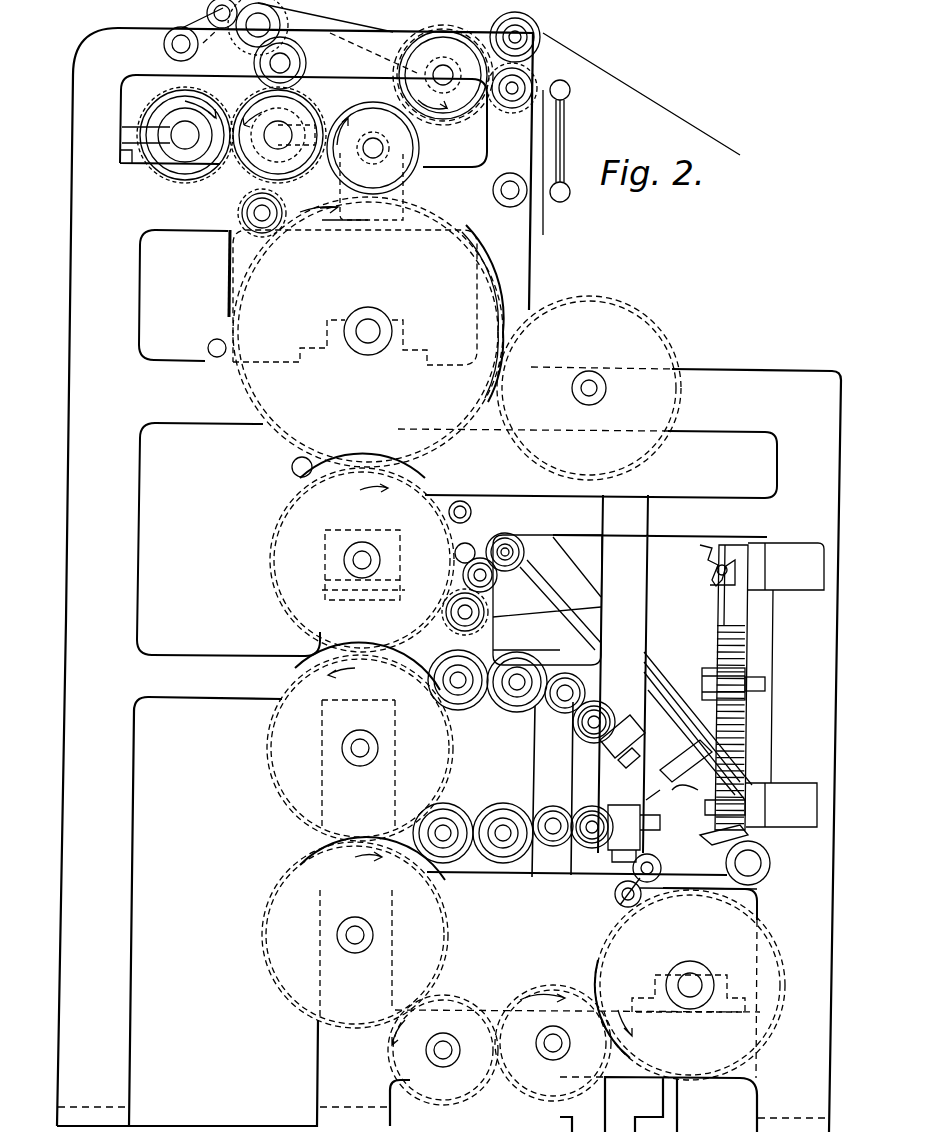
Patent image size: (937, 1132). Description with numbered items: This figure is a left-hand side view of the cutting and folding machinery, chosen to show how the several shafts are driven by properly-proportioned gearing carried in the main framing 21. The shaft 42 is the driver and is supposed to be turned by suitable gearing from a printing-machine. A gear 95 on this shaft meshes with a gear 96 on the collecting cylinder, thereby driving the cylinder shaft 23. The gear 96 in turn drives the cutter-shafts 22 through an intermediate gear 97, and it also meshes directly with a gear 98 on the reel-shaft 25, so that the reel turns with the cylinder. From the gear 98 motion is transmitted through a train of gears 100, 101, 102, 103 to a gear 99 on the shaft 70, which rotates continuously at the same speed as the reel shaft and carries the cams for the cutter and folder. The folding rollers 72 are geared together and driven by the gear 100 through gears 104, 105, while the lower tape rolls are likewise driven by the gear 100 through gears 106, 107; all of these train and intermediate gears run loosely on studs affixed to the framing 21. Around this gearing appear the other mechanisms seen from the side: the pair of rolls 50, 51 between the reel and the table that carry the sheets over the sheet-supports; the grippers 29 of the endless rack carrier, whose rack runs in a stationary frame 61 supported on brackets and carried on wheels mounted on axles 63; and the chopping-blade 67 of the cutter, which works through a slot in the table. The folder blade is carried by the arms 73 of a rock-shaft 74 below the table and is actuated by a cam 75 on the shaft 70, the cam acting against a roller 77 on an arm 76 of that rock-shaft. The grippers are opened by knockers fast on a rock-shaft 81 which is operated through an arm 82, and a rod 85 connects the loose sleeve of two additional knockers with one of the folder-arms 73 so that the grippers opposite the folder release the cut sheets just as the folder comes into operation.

The main framing 21 is at (449, 580).
The cutter-shafts 22 is at (231, 135).
The shaft of the collecting cylinder 23 is at (368, 330).
The shaft of the rotary sheet-carrier 25 is at (364, 558).
The grippers 29 is at (715, 572).
The driving shaft 42 is at (592, 388).
The roll 50 is at (510, 550).
The roll 51 is at (472, 558).
The stationary frame 61 is at (744, 687).
The axles 63 is at (765, 688).
The chopping-blade 67 is at (547, 600).
The shaft 70 is at (690, 985).
The rollers 72 is at (594, 718).
The arms 73 is at (698, 733).
The rock-shaft 74 is at (752, 862).
The cam 75 is at (577, 783).
The arm 76 is at (698, 890).
The roller 77 is at (608, 902).
The rock-shaft 81 is at (650, 866).
The arm 82 is at (655, 893).
The rod 85 is at (722, 840).
The gear 95 is at (500, 360).
The gear 96 is at (303, 215).
The intermediate gear 97 is at (373, 161).
The gear 98 is at (338, 475).
The gear 99 is at (628, 1025).
The gear 100 is at (398, 660).
The gear 101 is at (336, 845).
The gear 102 is at (420, 1000).
The gear 103 is at (605, 1005).
The gear 104 is at (460, 700).
The gear 105 is at (516, 705).
The gear 106 is at (450, 855).
The gear 107 is at (508, 855).